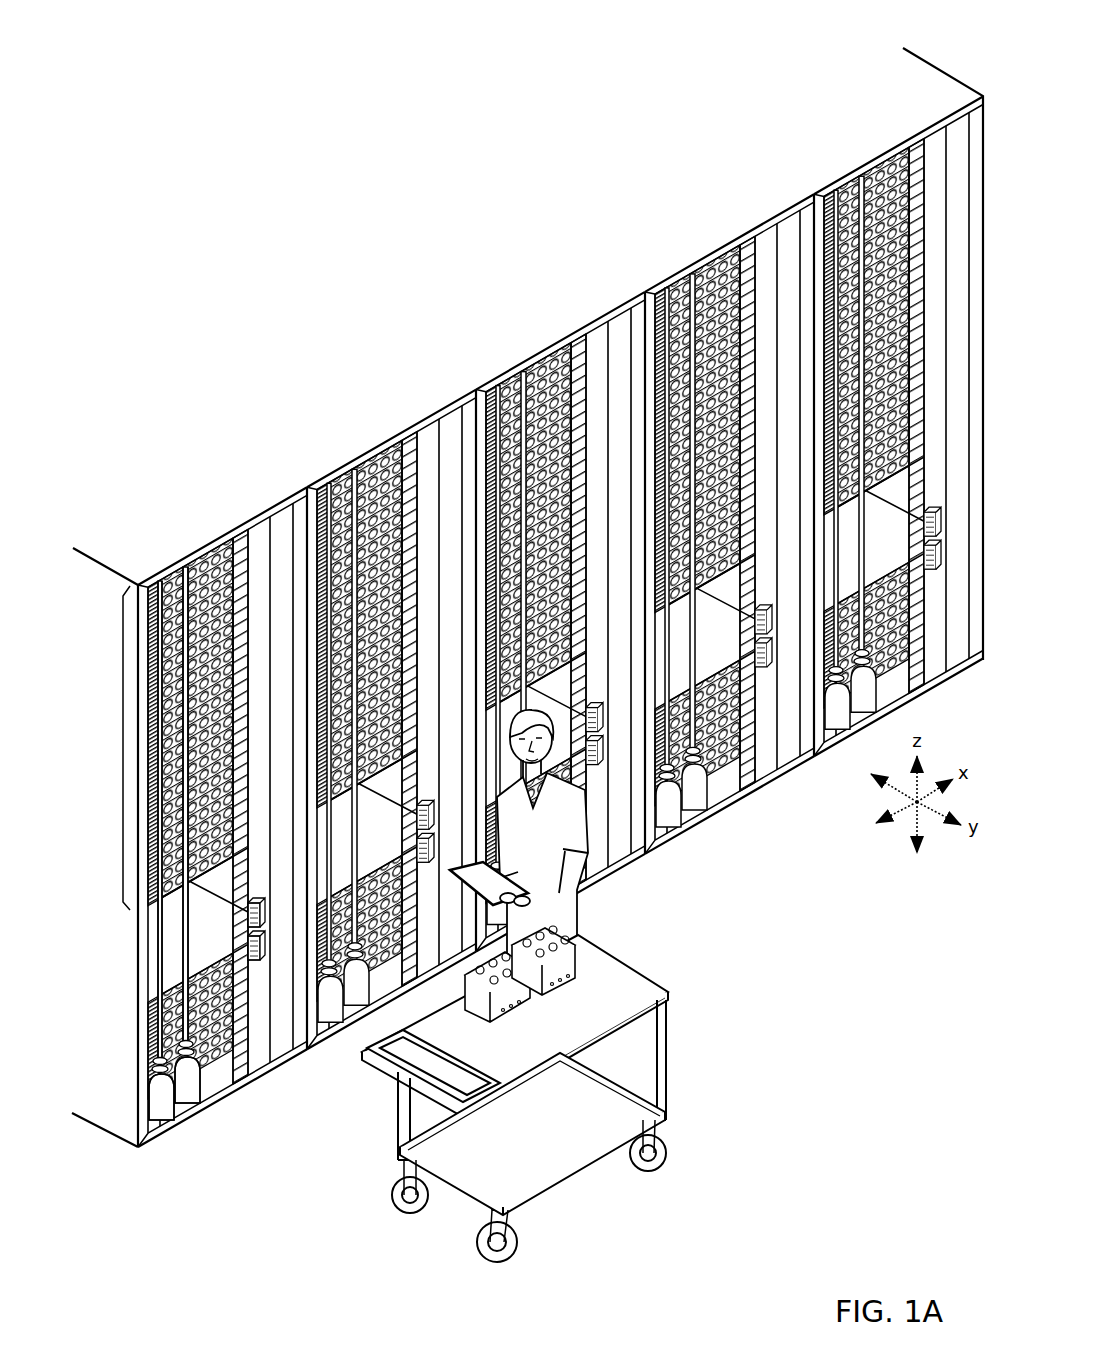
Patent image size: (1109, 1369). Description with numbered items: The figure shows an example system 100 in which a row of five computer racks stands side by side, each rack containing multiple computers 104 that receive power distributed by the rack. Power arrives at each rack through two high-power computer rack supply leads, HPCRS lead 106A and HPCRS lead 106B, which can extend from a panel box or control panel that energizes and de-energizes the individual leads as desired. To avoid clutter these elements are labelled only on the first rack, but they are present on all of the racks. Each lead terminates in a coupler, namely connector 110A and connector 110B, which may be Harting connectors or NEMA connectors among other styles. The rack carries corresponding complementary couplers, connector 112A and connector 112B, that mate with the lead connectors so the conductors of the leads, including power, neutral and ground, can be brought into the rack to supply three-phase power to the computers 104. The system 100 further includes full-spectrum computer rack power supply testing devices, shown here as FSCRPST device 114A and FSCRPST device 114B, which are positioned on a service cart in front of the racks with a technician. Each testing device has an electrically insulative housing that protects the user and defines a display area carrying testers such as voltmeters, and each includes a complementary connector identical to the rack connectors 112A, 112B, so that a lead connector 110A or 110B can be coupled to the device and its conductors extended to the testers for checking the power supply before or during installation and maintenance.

The system 100 is at (314, 37).
The computers 104 is at (122, 791).
The HPCRS lead 106A is at (156, 581).
The HPCRS lead 106B is at (186, 565).
The connector 110A is at (163, 1124).
The connector 110B is at (193, 1098).
The complementary connector 112A is at (250, 947).
The complementary connector 112B is at (250, 915).
The FSCRPST device 114A is at (465, 1012).
The FSCRPST device 114B is at (578, 960).